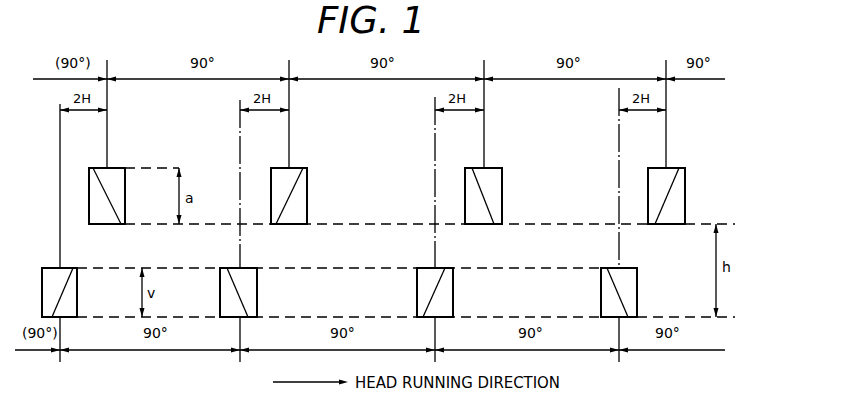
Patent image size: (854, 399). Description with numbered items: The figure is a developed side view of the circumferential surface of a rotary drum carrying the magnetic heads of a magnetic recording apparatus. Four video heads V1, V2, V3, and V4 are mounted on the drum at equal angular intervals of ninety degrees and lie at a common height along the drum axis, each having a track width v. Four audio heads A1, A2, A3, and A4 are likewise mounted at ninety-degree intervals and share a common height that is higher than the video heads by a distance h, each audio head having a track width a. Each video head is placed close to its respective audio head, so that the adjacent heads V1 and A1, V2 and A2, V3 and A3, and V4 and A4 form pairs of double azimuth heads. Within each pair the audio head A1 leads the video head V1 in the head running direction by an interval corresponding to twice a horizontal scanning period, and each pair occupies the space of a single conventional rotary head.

The audio head A1 is at (112, 168).
The audio head A2 is at (294, 168).
The audio head A3 is at (489, 168).
The audio head A4 is at (671, 168).
The video head V1 is at (50, 268).
The video head V2 is at (228, 268).
The video head V3 is at (425, 268).
The video head V4 is at (609, 268).